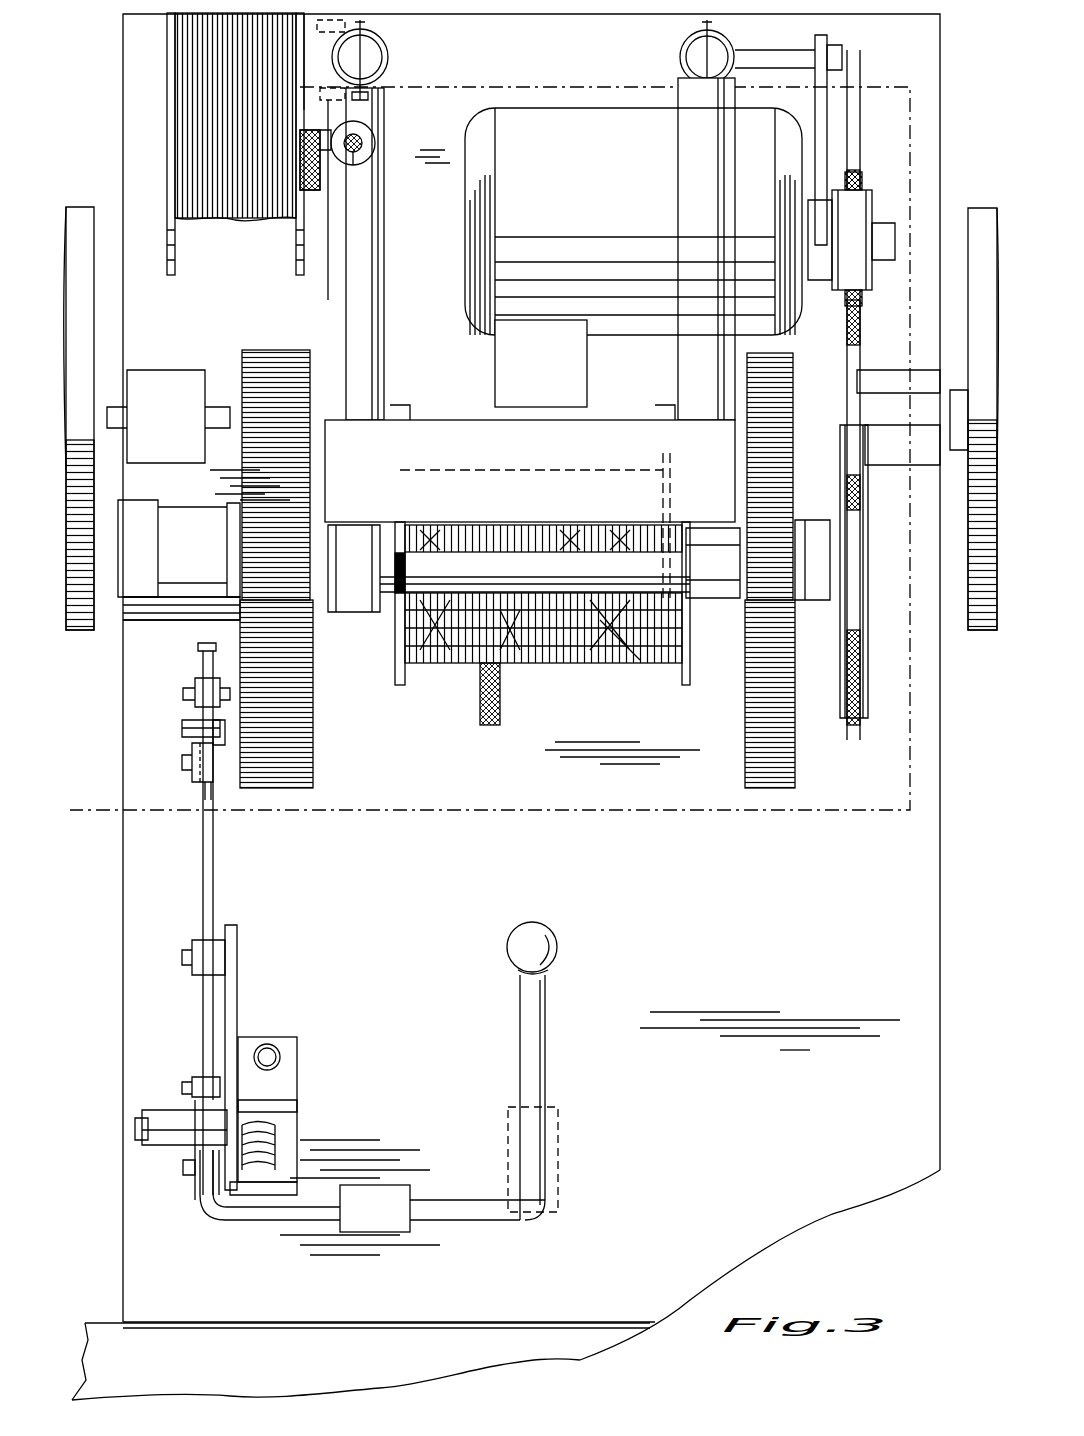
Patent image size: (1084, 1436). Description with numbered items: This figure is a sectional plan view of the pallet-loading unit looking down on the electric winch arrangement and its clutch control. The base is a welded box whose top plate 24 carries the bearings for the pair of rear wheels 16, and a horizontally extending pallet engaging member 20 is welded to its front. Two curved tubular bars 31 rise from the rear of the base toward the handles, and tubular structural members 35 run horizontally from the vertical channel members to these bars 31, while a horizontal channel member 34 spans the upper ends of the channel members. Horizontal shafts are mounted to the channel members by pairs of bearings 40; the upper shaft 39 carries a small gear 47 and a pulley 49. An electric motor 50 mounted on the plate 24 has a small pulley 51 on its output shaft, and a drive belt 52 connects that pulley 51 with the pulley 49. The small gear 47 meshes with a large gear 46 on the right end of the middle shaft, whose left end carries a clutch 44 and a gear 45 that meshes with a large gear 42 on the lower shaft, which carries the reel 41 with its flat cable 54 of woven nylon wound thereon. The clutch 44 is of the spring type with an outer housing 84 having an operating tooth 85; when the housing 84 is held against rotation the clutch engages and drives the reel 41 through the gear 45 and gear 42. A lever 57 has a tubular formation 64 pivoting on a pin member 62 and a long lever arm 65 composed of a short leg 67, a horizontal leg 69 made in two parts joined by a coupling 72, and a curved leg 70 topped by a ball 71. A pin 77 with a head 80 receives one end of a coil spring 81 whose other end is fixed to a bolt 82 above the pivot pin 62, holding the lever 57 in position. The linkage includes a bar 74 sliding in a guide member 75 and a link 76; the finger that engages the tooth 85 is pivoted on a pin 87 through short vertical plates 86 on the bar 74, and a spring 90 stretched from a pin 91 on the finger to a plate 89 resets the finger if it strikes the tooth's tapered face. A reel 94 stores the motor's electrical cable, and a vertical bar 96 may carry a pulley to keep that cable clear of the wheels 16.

The rear wheels 16 is at (80, 215).
The pallet engaging member 20 is at (565, 1348).
The top plate 24 is at (900, 942).
The curved tubular bars 31 is at (385, 52).
The horizontal channel member 34 is at (450, 440).
The tubular structural members 35 is at (376, 272).
The upper shaft 39 is at (650, 565).
The bearings 40 is at (720, 600).
The reel 41 is at (600, 660).
The large gear 42 is at (265, 355).
The clutch 44 is at (200, 525).
The gear 45 is at (290, 605).
The large gear 46 is at (755, 765).
The small gear 47 is at (775, 580).
The pulley 49 is at (868, 680).
The electric motor 50 is at (555, 118).
The small pulley 51 is at (862, 202).
The drive belt 52 is at (855, 340).
The flat cable 54 is at (500, 700).
The lever 57 is at (150, 1180).
The pin member 62 is at (137, 1133).
The tubular formation 64 is at (160, 1112).
The long lever arm 65 is at (253, 1242).
The short leg 67 is at (205, 1180).
The horizontal leg 69 is at (305, 1215).
The curved leg 70 is at (548, 1090).
The ball 71 is at (560, 947).
The coupling 72 is at (395, 1235).
The bar 74 is at (205, 888).
The guide member 75 is at (232, 912).
The link 76 is at (195, 1083).
The pin 77 is at (185, 1172).
The head 80 is at (270, 1150).
The coil spring 81 is at (275, 1120).
The bolt 82 is at (290, 1060).
The outer housing 84 is at (188, 617).
The operating tooth 85 is at (170, 605).
The short vertical plate 86 is at (182, 727).
The pin 87 is at (195, 693).
The plate 89 is at (222, 740).
The spring 90 is at (192, 760).
The pin 91 is at (185, 735).
The reel 94 is at (218, 190).
The vertical bar 96 is at (362, 143).